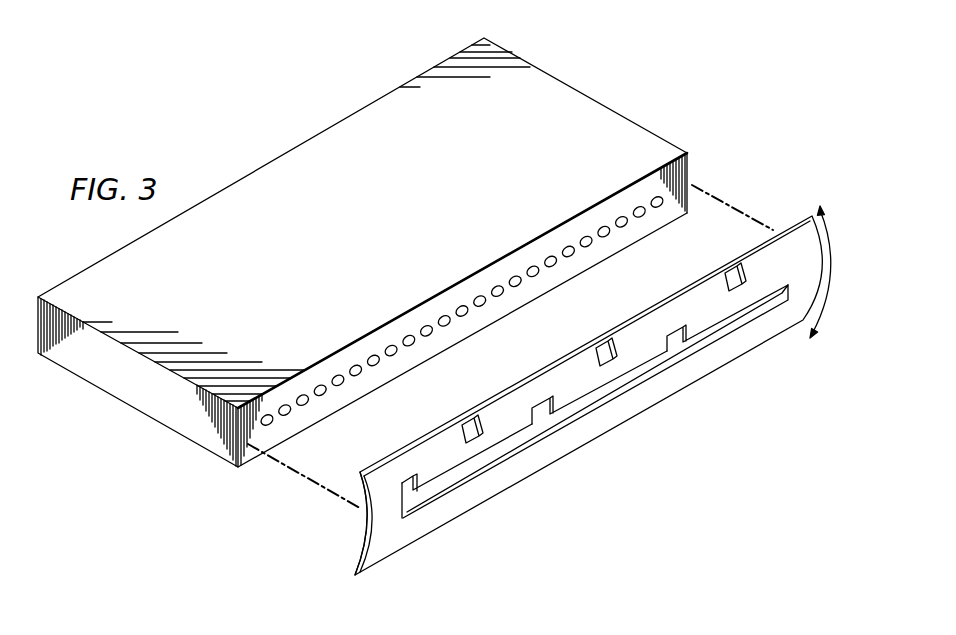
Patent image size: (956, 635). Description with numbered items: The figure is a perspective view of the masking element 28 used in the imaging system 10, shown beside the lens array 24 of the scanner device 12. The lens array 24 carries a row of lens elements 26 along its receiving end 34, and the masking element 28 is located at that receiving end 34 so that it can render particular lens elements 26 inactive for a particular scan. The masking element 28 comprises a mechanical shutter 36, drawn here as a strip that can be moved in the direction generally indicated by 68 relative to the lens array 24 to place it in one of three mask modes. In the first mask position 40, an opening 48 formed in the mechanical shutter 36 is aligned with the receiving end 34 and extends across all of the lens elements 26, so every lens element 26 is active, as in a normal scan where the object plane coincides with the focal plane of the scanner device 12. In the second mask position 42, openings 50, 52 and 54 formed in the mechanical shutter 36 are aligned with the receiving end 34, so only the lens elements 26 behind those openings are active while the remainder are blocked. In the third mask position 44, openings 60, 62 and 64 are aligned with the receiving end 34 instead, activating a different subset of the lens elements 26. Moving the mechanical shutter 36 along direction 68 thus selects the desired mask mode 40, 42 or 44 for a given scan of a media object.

The imaging system 10 is at (725, 75).
The scanner device 12 is at (198, 465).
The lens array 24 is at (150, 405).
The lens elements 26 is at (536, 276).
The masking element 28 is at (620, 437).
The receiving end 34 is at (695, 176).
The mechanical shutter 36 is at (528, 468).
The first mask position 40 is at (390, 520).
The second mask position 42 is at (386, 505).
The third mask position 44 is at (454, 442).
The opening 48 is at (667, 375).
The opening 50 is at (418, 477).
The opening 52 is at (556, 398).
The opening 54 is at (690, 323).
The opening 60 is at (476, 420).
The opening 62 is at (609, 342).
The opening 64 is at (744, 272).
The direction of shutter movement 68 is at (817, 338).